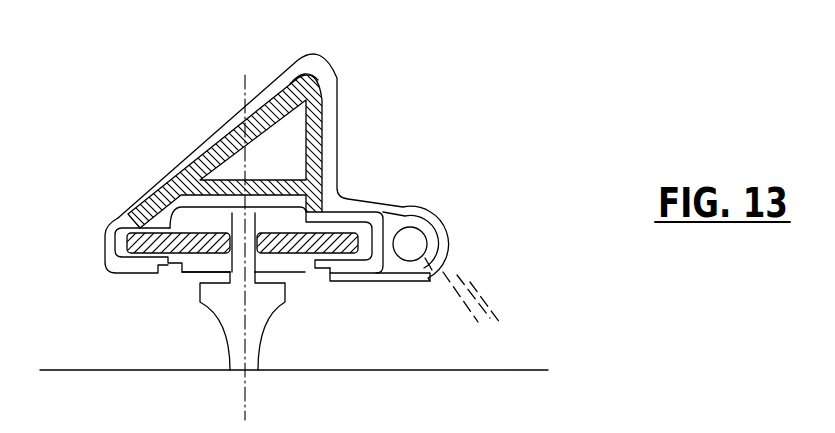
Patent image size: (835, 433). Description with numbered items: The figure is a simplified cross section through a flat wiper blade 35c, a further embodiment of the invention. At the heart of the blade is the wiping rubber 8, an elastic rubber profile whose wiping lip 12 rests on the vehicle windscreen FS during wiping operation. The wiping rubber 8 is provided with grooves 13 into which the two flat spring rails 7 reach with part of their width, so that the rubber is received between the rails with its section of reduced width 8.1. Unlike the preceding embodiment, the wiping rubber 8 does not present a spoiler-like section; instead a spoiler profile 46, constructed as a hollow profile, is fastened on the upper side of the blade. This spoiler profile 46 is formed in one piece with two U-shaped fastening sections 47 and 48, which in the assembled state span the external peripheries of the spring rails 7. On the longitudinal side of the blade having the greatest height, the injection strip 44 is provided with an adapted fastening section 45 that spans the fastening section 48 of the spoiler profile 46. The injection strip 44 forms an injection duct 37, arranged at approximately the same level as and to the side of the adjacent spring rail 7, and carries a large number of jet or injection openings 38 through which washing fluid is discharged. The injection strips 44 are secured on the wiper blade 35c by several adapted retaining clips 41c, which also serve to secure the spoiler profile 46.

The wiper blade 35c is at (370, 123).
The retaining clip 41c is at (220, 133).
The spoiler profile 46 is at (307, 100).
The fastening section 45 is at (378, 215).
The injection strip 44 is at (412, 224).
The injection duct 37 is at (412, 242).
The injection opening 38 is at (430, 283).
The fastening section 48 is at (343, 268).
The fastening section 47 is at (133, 265).
The spring rail 7 is at (165, 205).
The wiping rubber 8 is at (177, 325).
The section of reduced width 8.1 is at (242, 232).
The groove 13 is at (182, 262).
The wiping lip 12 is at (253, 348).
The vehicle windscreen FS is at (500, 370).